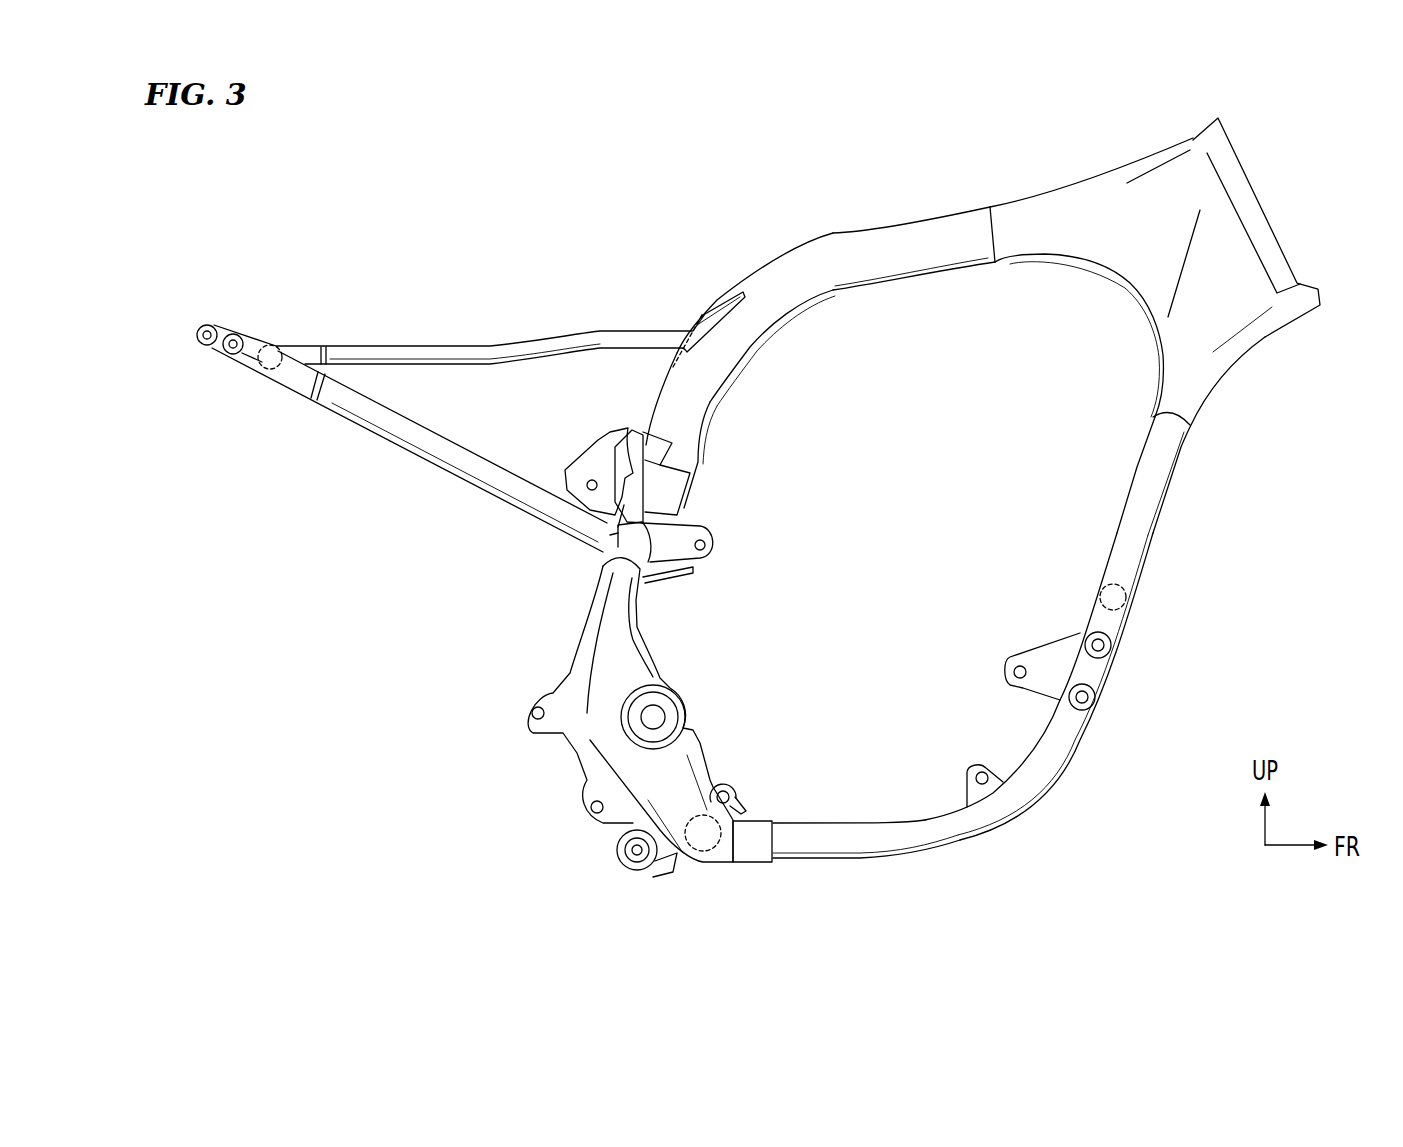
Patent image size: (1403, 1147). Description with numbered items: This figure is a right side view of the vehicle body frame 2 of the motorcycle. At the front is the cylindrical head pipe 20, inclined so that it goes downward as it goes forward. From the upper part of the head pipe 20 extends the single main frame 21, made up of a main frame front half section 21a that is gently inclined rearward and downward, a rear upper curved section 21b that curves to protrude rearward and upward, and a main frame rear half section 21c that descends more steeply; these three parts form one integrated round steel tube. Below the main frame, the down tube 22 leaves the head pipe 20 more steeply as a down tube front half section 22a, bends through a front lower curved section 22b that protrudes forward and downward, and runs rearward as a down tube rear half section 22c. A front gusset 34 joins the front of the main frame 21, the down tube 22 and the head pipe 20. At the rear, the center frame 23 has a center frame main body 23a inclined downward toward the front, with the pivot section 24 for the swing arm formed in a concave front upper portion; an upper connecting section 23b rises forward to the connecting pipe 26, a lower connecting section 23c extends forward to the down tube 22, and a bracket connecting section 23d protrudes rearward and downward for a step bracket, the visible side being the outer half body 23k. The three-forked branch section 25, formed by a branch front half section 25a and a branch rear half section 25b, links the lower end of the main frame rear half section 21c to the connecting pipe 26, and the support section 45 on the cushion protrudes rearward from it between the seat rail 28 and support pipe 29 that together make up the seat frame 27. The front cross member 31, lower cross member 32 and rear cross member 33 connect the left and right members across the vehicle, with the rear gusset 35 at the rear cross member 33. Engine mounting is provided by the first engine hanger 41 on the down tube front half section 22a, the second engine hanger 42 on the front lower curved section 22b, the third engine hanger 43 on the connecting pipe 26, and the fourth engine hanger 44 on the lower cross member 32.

The vehicle body frame 2 is at (760, 180).
The head pipe 20 is at (1258, 218).
The main frame 21 is at (905, 328).
The main frame front half section 21a is at (955, 222).
The rear upper curved section 21b is at (758, 277).
The main frame rear half section 21c is at (700, 422).
The down tube 22 is at (1047, 638).
The down tube front half section 22a is at (1160, 483).
The front lower curved section 22b is at (1005, 822).
The down tube rear half section 22c is at (830, 856).
The center frame 23 is at (616, 767).
The center frame main body 23a is at (607, 737).
The upper connecting section 23b is at (622, 590).
The lower connecting section 23c is at (760, 852).
The bracket connecting section 23d is at (583, 807).
The outer half body 23k is at (680, 766).
The pivot section 24 is at (667, 703).
The branch section 25 is at (687, 450).
The branch front half section 25a is at (682, 511).
The branch rear half section 25b is at (633, 470).
The connecting pipe 26 is at (620, 540).
The seat frame 27 is at (471, 410).
The seat rail 28 is at (405, 348).
The support pipe 29 is at (440, 458).
The front cross member 31 is at (1118, 609).
The lower cross member 32 is at (727, 851).
The rear cross member 33 is at (262, 344).
The front gusset 34 is at (1133, 282).
The rear gusset 35 is at (302, 382).
The first engine hanger 41 is at (1043, 655).
The second engine hanger 42 is at (975, 767).
The third engine hanger 43 is at (715, 549).
The fourth engine hanger 44 is at (735, 795).
The support section on the cushion 45 is at (585, 470).